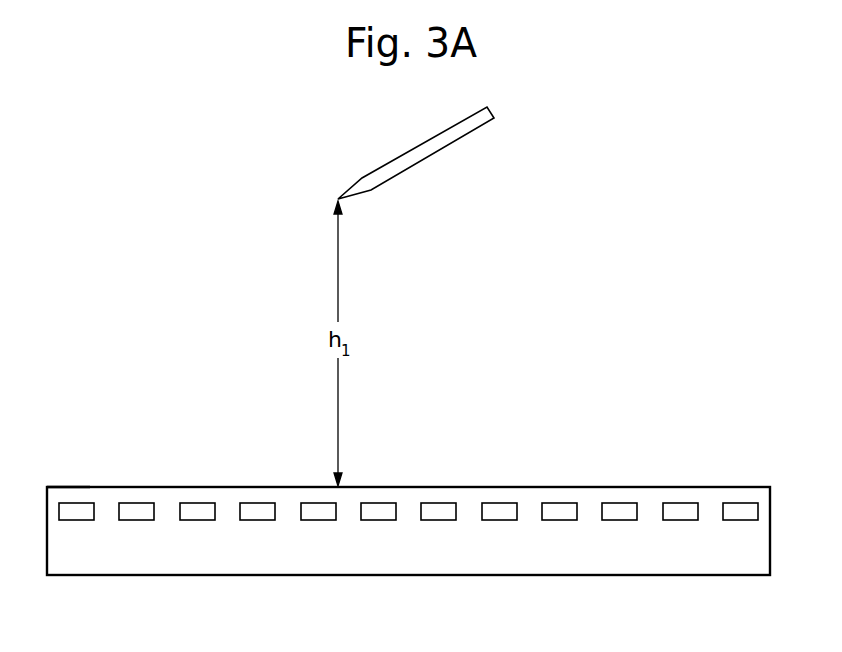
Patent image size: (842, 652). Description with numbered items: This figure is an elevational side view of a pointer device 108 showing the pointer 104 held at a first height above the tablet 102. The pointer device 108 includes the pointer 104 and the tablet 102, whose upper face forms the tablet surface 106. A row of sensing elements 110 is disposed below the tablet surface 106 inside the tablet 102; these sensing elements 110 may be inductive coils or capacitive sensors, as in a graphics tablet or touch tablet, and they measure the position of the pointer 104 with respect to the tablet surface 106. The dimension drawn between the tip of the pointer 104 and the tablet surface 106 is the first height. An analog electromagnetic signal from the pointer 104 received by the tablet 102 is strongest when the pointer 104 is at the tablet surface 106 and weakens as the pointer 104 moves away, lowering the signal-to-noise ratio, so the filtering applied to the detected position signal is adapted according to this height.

The tablet 102 is at (748, 487).
The pointer 104 is at (393, 160).
The tablet surface 106 is at (74, 478).
The pointer device 108 is at (615, 316).
The sensing elements 110 is at (78, 520).